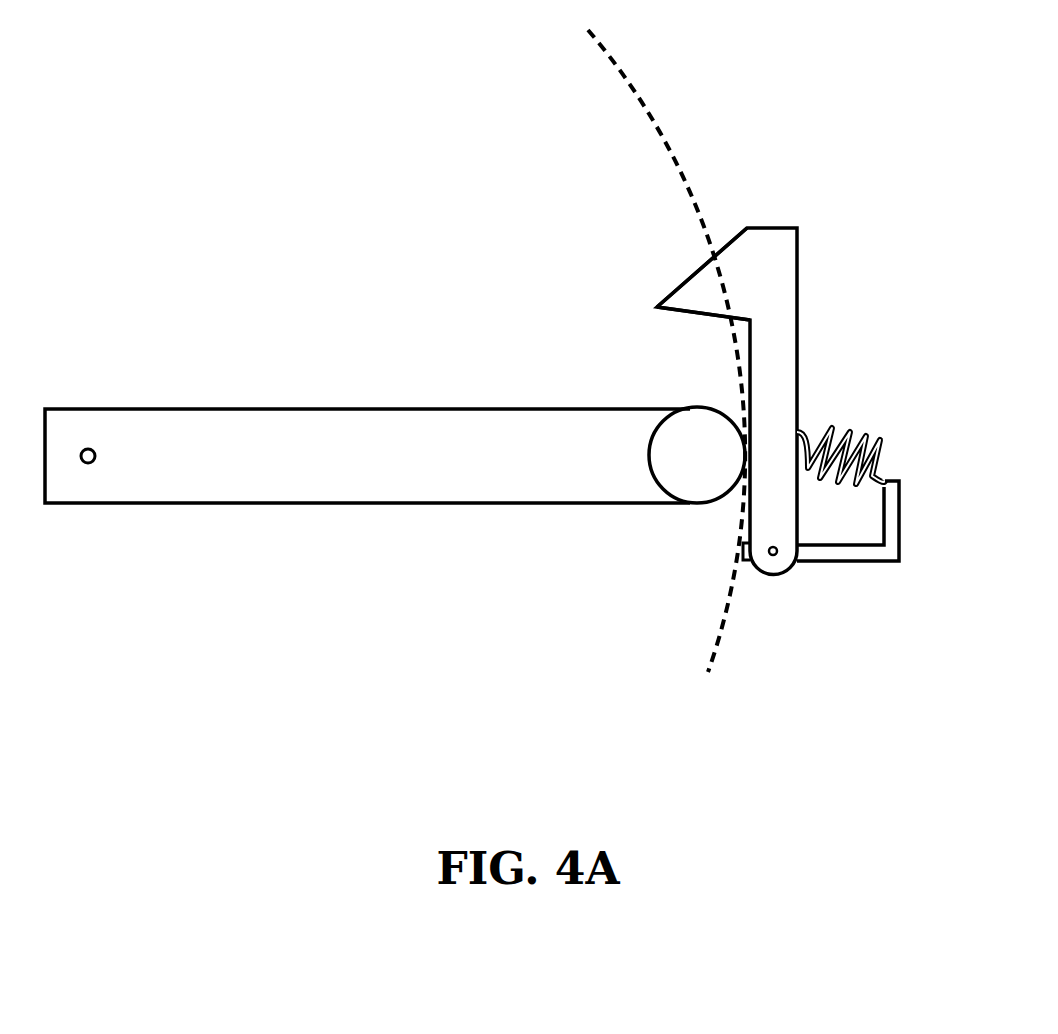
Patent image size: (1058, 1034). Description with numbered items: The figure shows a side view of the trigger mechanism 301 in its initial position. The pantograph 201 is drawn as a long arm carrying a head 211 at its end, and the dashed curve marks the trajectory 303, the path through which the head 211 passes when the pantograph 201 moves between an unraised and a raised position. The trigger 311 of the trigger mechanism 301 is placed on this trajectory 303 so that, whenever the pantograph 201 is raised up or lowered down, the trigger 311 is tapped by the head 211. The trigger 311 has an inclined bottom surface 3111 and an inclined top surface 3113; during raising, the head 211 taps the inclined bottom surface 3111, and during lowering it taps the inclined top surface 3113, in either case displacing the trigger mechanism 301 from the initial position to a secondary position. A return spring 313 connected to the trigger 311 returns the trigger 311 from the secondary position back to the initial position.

The pantograph 201 is at (268, 409).
The head 211 is at (690, 504).
The trigger mechanism 301 is at (692, 688).
The trajectory 303 is at (631, 88).
The trigger 311 is at (797, 268).
The inclined bottom surface 3111 is at (689, 317).
The inclined top surface 3113 is at (688, 272).
The return spring 313 is at (850, 438).